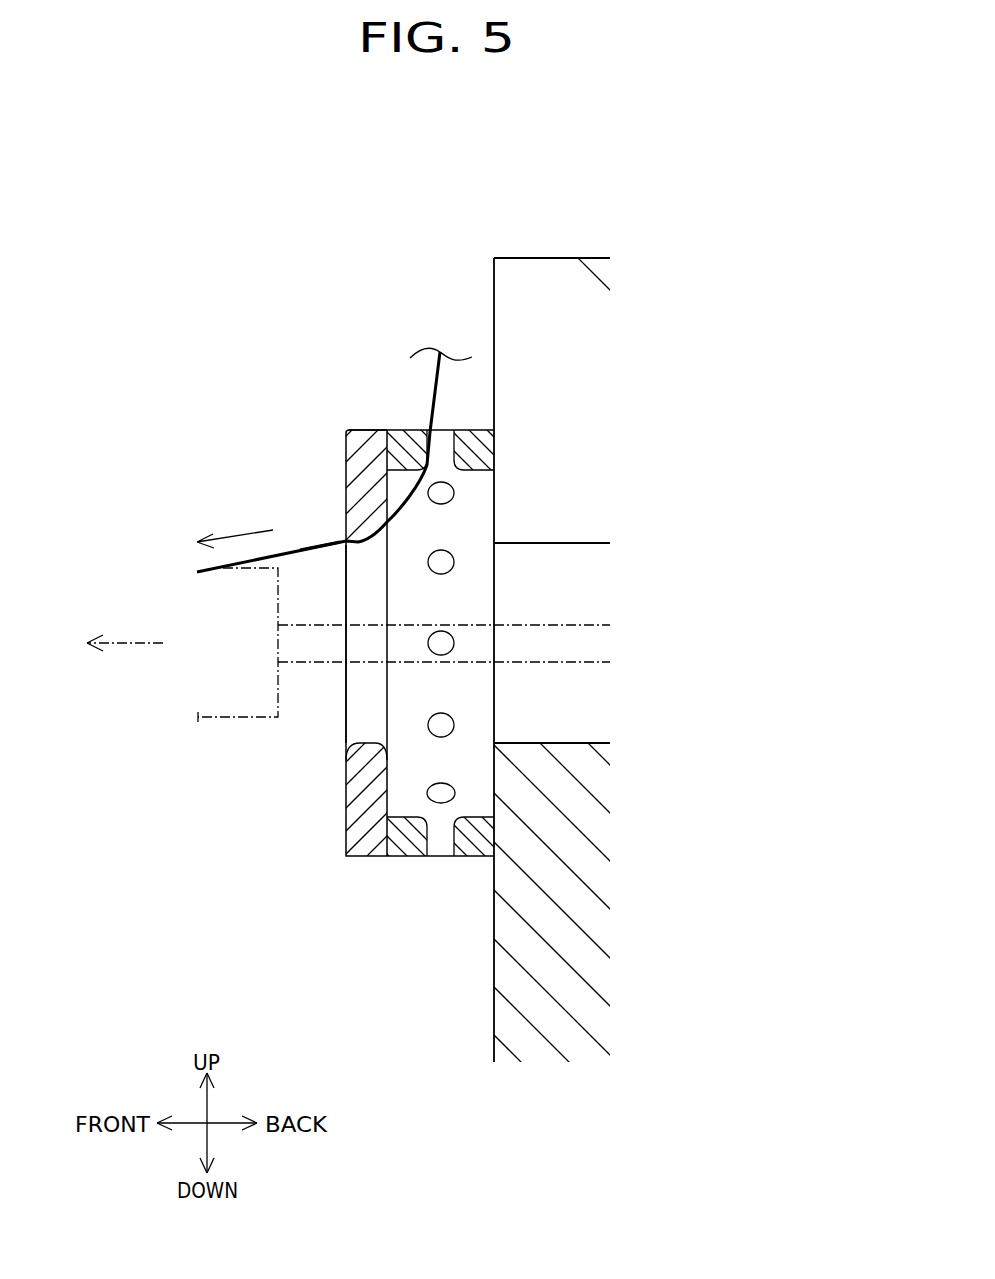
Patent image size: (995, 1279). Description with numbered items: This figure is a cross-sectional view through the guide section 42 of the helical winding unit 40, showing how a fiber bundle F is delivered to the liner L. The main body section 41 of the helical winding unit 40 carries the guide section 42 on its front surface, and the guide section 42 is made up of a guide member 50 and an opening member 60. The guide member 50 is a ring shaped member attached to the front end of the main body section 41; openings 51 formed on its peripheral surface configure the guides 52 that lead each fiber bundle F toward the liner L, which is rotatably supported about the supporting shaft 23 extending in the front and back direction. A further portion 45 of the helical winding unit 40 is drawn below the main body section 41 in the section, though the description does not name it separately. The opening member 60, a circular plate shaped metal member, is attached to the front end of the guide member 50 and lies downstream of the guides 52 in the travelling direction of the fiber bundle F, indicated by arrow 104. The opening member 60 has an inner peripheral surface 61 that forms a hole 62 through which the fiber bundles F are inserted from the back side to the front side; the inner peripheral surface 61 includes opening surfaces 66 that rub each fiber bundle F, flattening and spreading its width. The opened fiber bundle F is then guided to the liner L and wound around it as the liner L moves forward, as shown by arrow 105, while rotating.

The helical winding unit 40 is at (606, 199).
The main body section 41 is at (540, 260).
The guide section 42 is at (327, 397).
The lower wall portion 45 is at (626, 560).
The opening 51 is at (446, 420).
The guide member 50 is at (470, 858).
The guide 52 is at (441, 797).
The opening member 60 is at (360, 858).
The inner peripheral surface 61 is at (366, 734).
The hole 62 is at (335, 706).
The opening surface 66 is at (375, 556).
The supporting shaft 23 is at (600, 624).
The arrow 104 is at (237, 533).
The arrow 105 is at (123, 647).
The fiber bundle F is at (320, 547).
The liner L is at (210, 712).